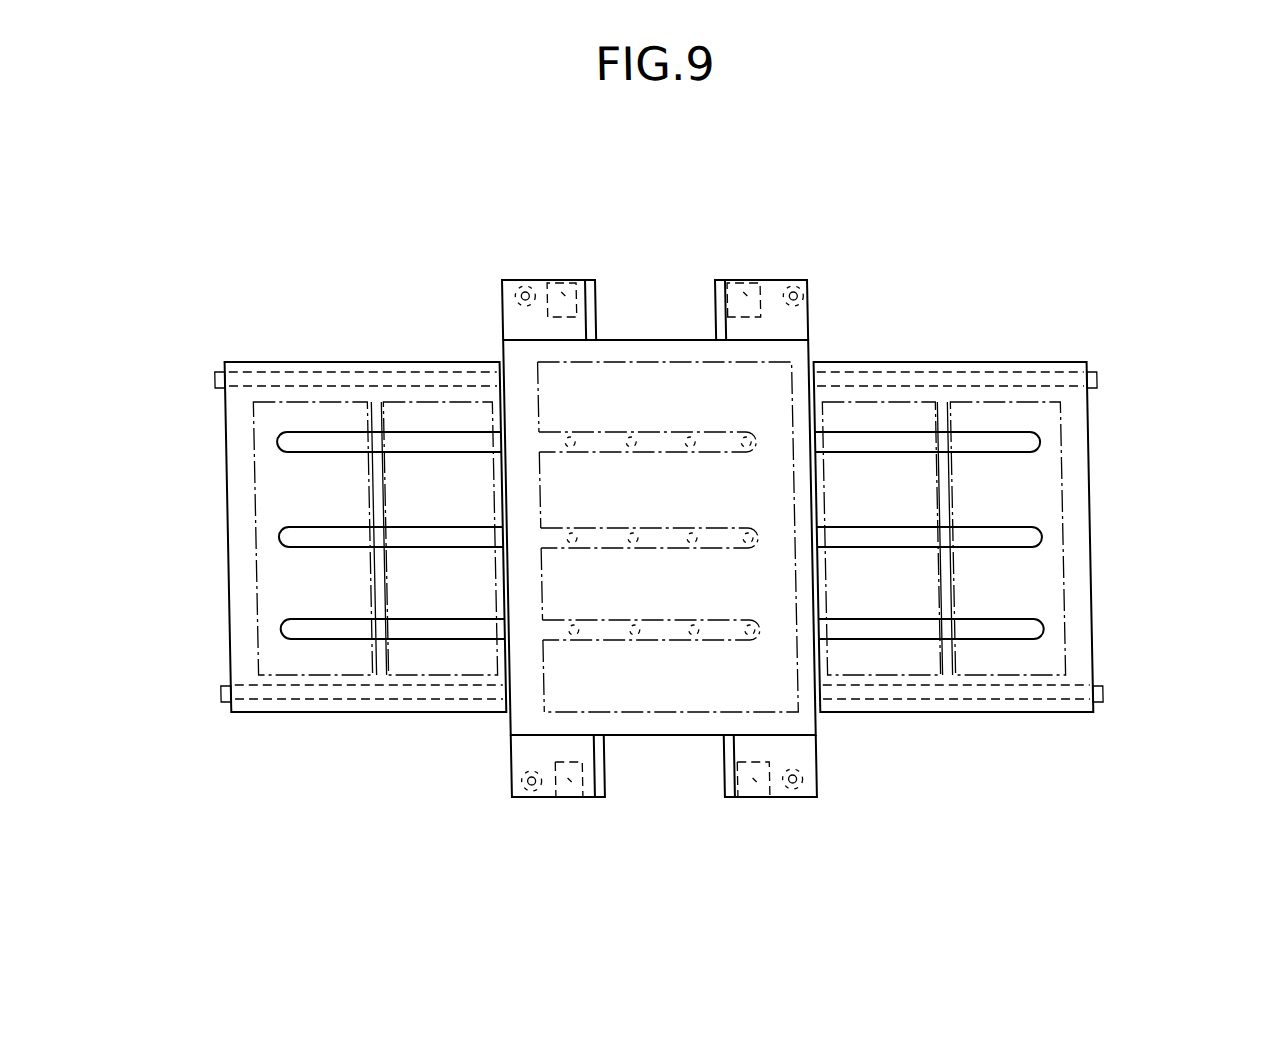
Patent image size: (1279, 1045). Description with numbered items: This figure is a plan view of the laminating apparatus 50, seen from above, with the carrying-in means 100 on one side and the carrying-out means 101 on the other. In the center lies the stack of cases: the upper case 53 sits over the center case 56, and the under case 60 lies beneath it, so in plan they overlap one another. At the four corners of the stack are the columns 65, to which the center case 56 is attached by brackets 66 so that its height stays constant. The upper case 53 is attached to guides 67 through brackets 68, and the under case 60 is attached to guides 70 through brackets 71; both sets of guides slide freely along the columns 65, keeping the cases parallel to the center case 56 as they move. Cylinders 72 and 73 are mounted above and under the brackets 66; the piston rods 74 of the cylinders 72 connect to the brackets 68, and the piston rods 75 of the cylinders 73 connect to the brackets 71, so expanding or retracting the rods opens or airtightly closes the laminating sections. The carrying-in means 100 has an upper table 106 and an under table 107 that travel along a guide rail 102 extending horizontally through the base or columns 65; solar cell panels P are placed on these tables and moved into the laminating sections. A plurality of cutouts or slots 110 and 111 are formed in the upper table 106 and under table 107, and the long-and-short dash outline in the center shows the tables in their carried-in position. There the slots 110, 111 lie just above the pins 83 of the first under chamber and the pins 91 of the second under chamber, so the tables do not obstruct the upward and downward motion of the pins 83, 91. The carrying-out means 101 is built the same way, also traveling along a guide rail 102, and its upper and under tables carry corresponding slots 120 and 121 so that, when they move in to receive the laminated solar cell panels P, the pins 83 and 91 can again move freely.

The laminating apparatus 50 is at (661, 195).
The upper case 53 is at (734, 523).
The center case 56 is at (734, 523).
The under case 60 is at (800, 350).
The columns 65 is at (521, 298).
The brackets 66 is at (597, 280).
The guides 67 is at (661, 517).
The guides 70 is at (523, 288).
The brackets 68 is at (658, 496).
The brackets 71 is at (533, 282).
The cylinders 72 is at (661, 520).
The cylinders 73 is at (545, 282).
The piston rods 74 is at (654, 538).
The piston rods 75 is at (578, 282).
The pins 83 is at (654, 507).
The pins 91 is at (562, 532).
The carrying-in means 100 is at (1110, 444).
The carrying-out means 101 is at (215, 421).
The guide rail 102 is at (1100, 378).
The upper table 106 is at (896, 495).
The under table 107 is at (617, 362).
The cutouts or slots 110 is at (801, 536).
The cutouts or slots 111 is at (575, 476).
The cutouts or slots 120 is at (385, 535).
The cutouts or slots 121 is at (303, 450).
The solar cell panel P is at (256, 481).